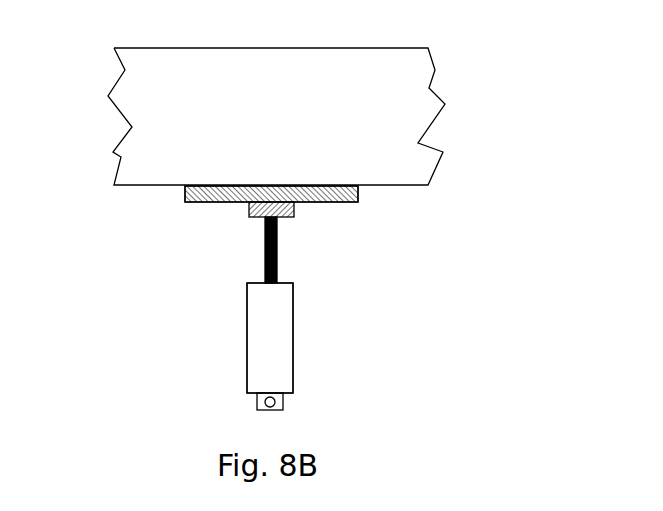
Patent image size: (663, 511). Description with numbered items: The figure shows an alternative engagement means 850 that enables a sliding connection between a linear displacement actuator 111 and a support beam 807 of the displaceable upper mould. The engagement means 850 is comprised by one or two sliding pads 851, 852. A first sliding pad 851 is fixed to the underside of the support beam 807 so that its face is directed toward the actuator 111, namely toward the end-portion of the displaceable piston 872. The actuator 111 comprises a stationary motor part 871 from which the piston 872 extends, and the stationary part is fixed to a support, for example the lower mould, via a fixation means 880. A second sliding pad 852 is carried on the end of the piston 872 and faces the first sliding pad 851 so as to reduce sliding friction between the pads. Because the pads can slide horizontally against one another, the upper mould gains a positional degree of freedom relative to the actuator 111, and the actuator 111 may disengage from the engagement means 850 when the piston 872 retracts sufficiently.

The support beam 807 is at (396, 63).
The engagement means 850 is at (368, 207).
The sliding pad 851 is at (185, 203).
The second sliding pad 852 is at (248, 212).
The piston 872 is at (282, 250).
The stationary motor part 871 is at (297, 336).
The linear displacement actuator 111 is at (238, 336).
The fixation means 880 is at (283, 403).